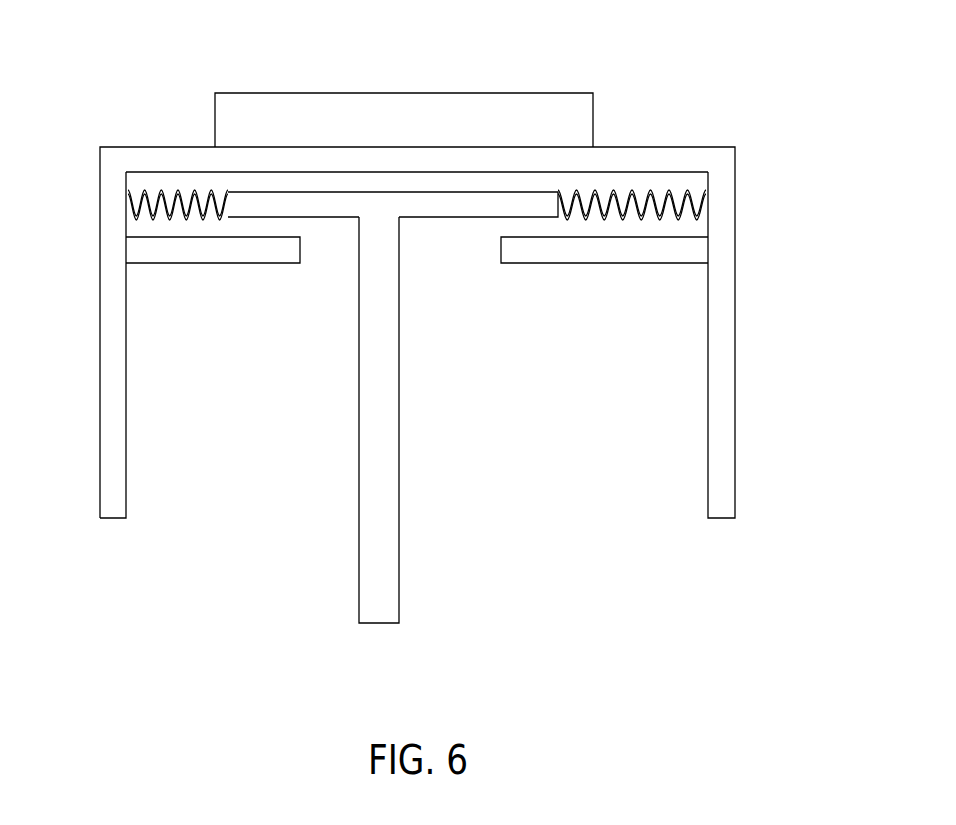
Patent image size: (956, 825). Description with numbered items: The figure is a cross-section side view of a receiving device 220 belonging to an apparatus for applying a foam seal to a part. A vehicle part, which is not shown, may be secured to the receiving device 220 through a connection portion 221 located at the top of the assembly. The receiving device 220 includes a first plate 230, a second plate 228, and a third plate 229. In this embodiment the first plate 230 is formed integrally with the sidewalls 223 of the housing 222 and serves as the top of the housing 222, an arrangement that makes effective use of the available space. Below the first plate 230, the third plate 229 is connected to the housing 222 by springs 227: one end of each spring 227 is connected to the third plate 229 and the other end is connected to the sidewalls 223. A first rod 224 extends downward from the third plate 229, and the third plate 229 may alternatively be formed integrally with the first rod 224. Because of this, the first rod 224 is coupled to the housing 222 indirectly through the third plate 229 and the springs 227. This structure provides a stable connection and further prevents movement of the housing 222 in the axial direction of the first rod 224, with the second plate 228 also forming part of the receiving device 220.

The receiving device 220 is at (821, 152).
The connection portion 221 is at (286, 110).
The housing 222 is at (722, 142).
The sidewalls 223 is at (135, 181).
The first rod 224 is at (364, 586).
The springs 227 is at (173, 221).
The second plate 228 is at (551, 253).
The third plate 229 is at (333, 212).
The first plate 230 is at (144, 158).